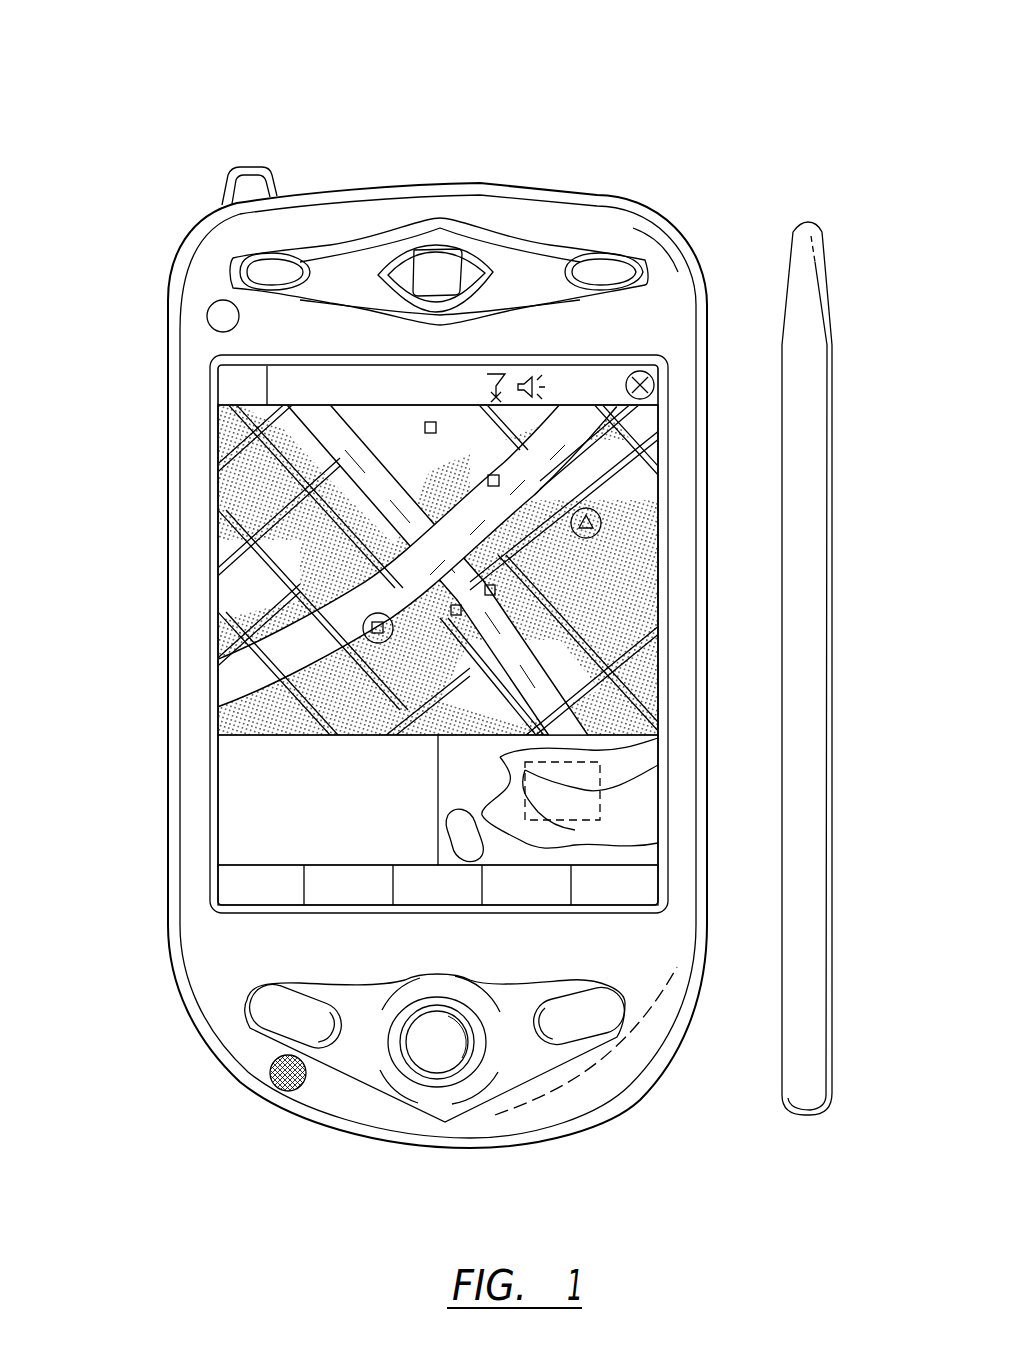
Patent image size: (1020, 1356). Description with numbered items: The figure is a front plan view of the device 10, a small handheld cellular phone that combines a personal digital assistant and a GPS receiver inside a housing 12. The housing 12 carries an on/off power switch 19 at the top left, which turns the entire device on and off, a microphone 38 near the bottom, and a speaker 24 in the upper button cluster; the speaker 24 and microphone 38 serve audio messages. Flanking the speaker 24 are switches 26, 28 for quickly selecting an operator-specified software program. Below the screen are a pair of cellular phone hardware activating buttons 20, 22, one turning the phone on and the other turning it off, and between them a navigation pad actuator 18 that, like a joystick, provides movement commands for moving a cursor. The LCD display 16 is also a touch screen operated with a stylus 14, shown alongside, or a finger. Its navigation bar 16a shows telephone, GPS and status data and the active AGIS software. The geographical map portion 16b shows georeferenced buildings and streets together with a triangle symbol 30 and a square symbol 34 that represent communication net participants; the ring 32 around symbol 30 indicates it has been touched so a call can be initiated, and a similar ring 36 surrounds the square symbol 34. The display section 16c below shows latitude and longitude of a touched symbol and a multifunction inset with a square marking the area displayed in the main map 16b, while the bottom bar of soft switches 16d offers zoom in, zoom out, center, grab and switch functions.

The device 10 is at (690, 116).
The housing 12 is at (166, 706).
The stylus 14 is at (831, 476).
The LCD display 16 is at (620, 352).
The navigation bar 16a is at (246, 384).
The geographical map display portion 16b is at (240, 562).
The display section 16c is at (246, 806).
The soft switches 16d is at (222, 890).
The navigation pad actuator 18 is at (437, 1058).
The on/off power switch 19 is at (245, 170).
The cellular phone hardware activating button 20 is at (590, 1040).
The cellular phone hardware activating button 22 is at (290, 1024).
The speaker 24 is at (436, 275).
The switch 26 is at (600, 270).
The switch 28 is at (272, 268).
The symbol 30 is at (598, 520).
The ring 32 is at (602, 538).
The symbol 34 is at (371, 627).
The position circle 36 is at (363, 637).
The microphone 38 is at (290, 1092).